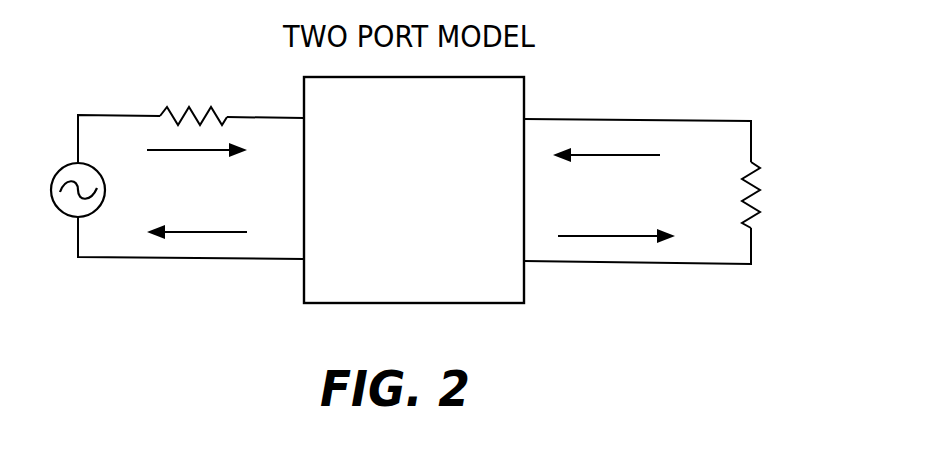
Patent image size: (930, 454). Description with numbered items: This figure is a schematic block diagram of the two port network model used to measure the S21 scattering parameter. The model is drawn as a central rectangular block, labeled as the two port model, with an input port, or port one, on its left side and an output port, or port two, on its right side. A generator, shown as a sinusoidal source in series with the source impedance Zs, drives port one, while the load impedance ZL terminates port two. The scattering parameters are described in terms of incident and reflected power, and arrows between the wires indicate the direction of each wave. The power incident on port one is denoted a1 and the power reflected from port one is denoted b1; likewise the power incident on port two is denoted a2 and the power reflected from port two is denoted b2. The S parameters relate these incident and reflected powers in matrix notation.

The source impedance Zs is at (193, 99).
The load impedance ZL is at (769, 195).
The power incident on port one a1 is at (197, 162).
The power reflected from port one b1 is at (197, 220).
The power incident on port two a2 is at (606, 167).
The power reflected from port two b2 is at (616, 223).